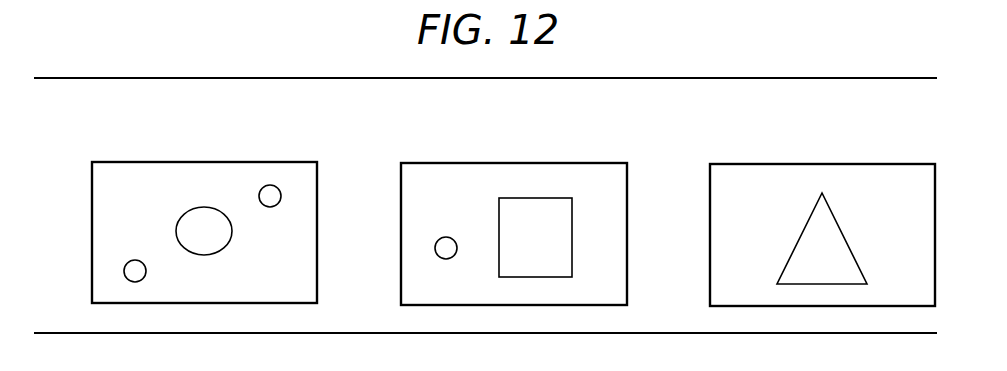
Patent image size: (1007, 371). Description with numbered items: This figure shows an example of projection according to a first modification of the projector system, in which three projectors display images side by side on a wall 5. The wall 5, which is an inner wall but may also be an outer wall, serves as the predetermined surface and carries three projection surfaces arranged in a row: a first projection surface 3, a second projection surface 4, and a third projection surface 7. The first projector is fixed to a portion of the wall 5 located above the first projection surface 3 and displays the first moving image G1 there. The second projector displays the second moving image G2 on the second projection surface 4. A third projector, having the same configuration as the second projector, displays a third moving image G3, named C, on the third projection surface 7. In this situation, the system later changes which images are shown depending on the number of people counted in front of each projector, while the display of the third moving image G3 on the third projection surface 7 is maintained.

The first projection surface 3 is at (273, 162).
The second projection surface 4 is at (585, 162).
The third projection surface 7 is at (893, 162).
The wall 5 is at (890, 113).
The first moving image G1 is at (115, 237).
The second moving image G2 is at (423, 238).
The third moving image G3 is at (732, 239).